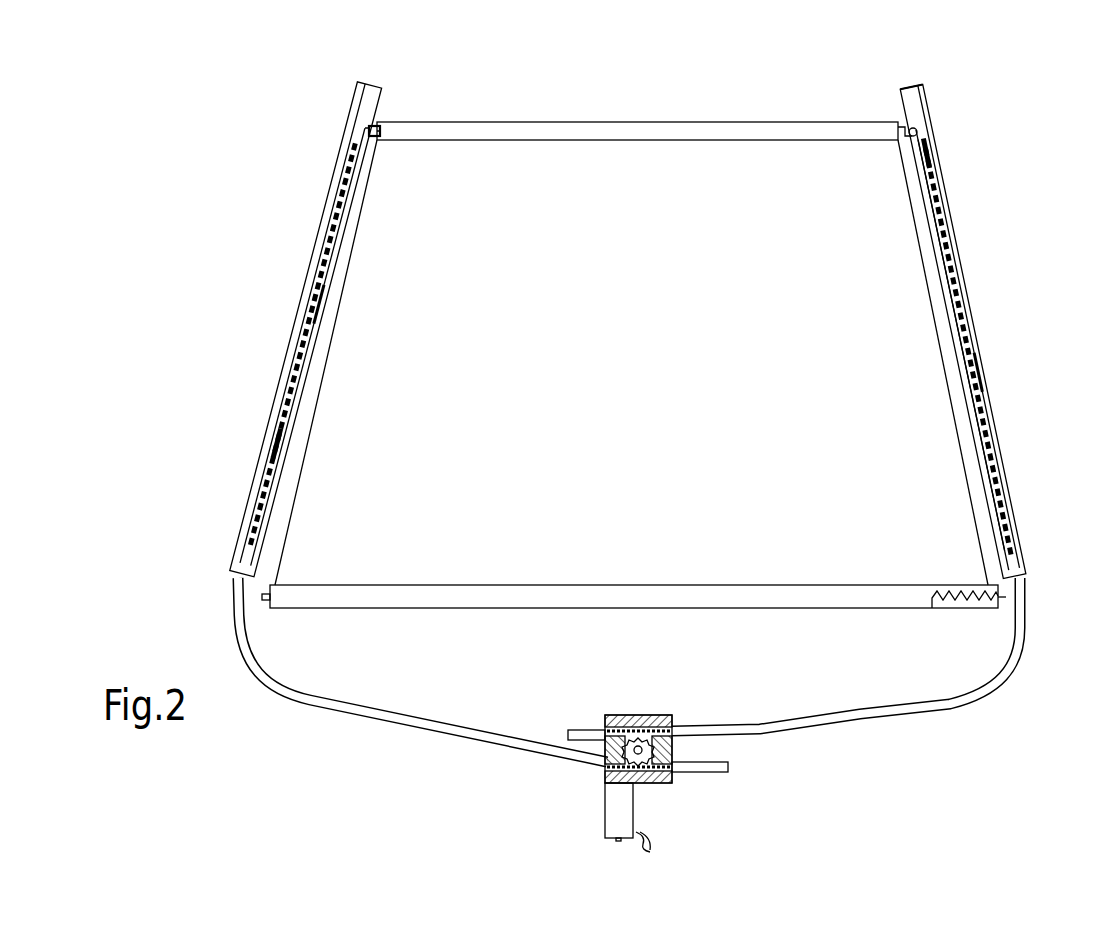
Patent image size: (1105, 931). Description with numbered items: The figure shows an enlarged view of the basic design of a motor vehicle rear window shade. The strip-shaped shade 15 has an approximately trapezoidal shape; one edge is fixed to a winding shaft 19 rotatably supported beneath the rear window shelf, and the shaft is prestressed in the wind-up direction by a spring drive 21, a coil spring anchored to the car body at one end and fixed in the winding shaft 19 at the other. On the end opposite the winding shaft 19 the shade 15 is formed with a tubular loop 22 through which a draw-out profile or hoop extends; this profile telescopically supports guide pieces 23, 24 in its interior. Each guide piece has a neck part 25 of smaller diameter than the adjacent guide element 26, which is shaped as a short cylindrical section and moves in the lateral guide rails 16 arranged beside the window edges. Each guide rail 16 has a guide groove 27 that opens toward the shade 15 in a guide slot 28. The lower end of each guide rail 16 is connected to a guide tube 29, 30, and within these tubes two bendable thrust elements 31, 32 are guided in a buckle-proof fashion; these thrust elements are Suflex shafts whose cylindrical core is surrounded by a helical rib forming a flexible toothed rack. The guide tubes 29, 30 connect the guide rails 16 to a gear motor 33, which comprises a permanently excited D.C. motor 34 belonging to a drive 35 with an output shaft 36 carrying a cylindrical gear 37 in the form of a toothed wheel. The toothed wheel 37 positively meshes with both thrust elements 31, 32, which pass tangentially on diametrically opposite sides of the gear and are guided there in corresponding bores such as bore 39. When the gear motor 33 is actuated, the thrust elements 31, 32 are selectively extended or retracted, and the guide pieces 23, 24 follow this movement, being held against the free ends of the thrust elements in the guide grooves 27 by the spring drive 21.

The strip-shaped shade 15 is at (633, 393).
The guide rail 16 is at (307, 290).
The winding shaft 19 is at (990, 610).
The spring drive 21 is at (950, 591).
The tubular loop 22 is at (575, 122).
The guide piece 23 is at (382, 113).
The guide piece 24 is at (897, 114).
The neck part 25 is at (918, 130).
The guide element 26 is at (937, 146).
The guide groove 27 is at (968, 312).
The guide slot 28 is at (286, 452).
The guide tube 29 is at (382, 706).
The guide tube 30 is at (880, 712).
The bendable thrust element 31 is at (325, 308).
The bendable thrust element 32 is at (985, 388).
The gear motor 33 is at (676, 708).
The D.C. motor 34 is at (618, 809).
The drive 35 is at (595, 776).
The output shaft 36 is at (608, 718).
The cylindrical gear 37 is at (675, 753).
The bore 39 is at (641, 714).